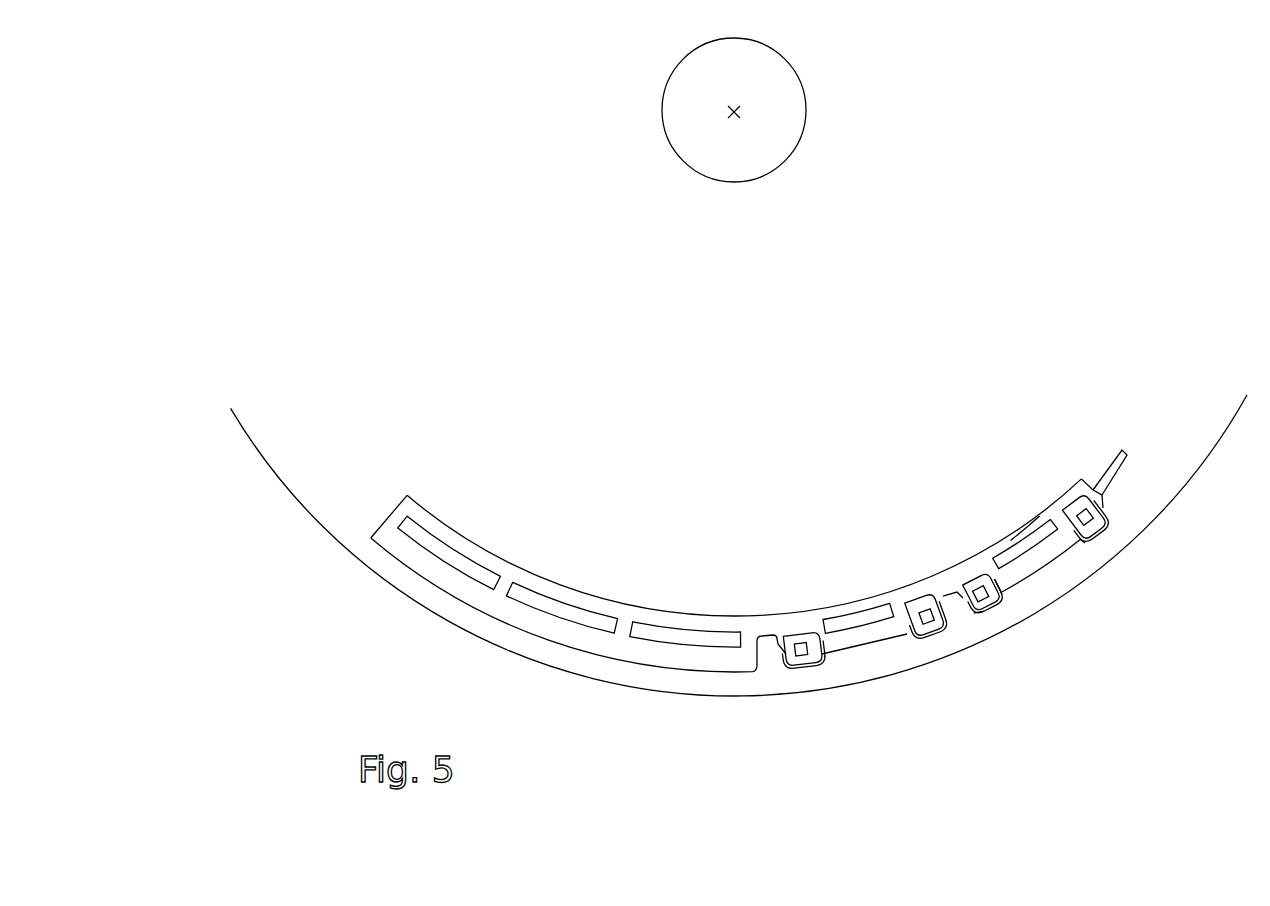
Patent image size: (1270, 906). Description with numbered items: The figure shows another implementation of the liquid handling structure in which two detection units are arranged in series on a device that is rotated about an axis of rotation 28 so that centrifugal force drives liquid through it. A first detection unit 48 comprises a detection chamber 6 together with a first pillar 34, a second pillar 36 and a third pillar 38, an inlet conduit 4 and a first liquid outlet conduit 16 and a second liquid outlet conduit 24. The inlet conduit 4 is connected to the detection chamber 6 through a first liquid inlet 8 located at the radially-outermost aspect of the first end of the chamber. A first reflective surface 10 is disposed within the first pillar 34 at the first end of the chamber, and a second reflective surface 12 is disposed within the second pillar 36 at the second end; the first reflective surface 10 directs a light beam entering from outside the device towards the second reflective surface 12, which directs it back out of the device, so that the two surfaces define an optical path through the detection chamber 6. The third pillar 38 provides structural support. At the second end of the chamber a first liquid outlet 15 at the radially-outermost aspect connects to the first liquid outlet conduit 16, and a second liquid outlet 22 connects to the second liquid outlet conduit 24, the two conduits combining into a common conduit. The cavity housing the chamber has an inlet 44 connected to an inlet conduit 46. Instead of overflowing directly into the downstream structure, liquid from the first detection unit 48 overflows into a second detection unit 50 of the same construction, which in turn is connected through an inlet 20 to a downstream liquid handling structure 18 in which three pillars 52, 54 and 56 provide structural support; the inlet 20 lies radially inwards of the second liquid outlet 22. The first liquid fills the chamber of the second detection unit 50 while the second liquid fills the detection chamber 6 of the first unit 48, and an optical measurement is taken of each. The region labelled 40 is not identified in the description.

The axis of rotation 28 is at (745, 113).
The downstream liquid handling structure 18 is at (632, 648).
The pillar 56 is at (447, 553).
The pillar 54 is at (556, 612).
The pillar 52 is at (676, 632).
The second detection unit 50 is at (950, 662).
The inlet 20 is at (927, 590).
The second liquid outlet conduit 24 is at (968, 575).
The second pillar 36 is at (970, 595).
The first liquid outlet conduit 16 is at (983, 613).
The second liquid outlet 22 is at (990, 565).
The second reflective surface 12 is at (978, 605).
The first liquid outlet 15 is at (1003, 598).
The detection chamber 6 is at (1022, 577).
The third pillar 38 is at (1038, 538).
The strip portion 40 is at (1018, 537).
The first detection unit 48 is at (1162, 605).
The inlet conduit 4 is at (1103, 507).
The first reflective surface 10 is at (1095, 518).
The first pillar 34 is at (1097, 525).
The first liquid inlet 8 is at (1082, 543).
The inlet 44 is at (1092, 490).
The inlet conduit 46 is at (1108, 462).